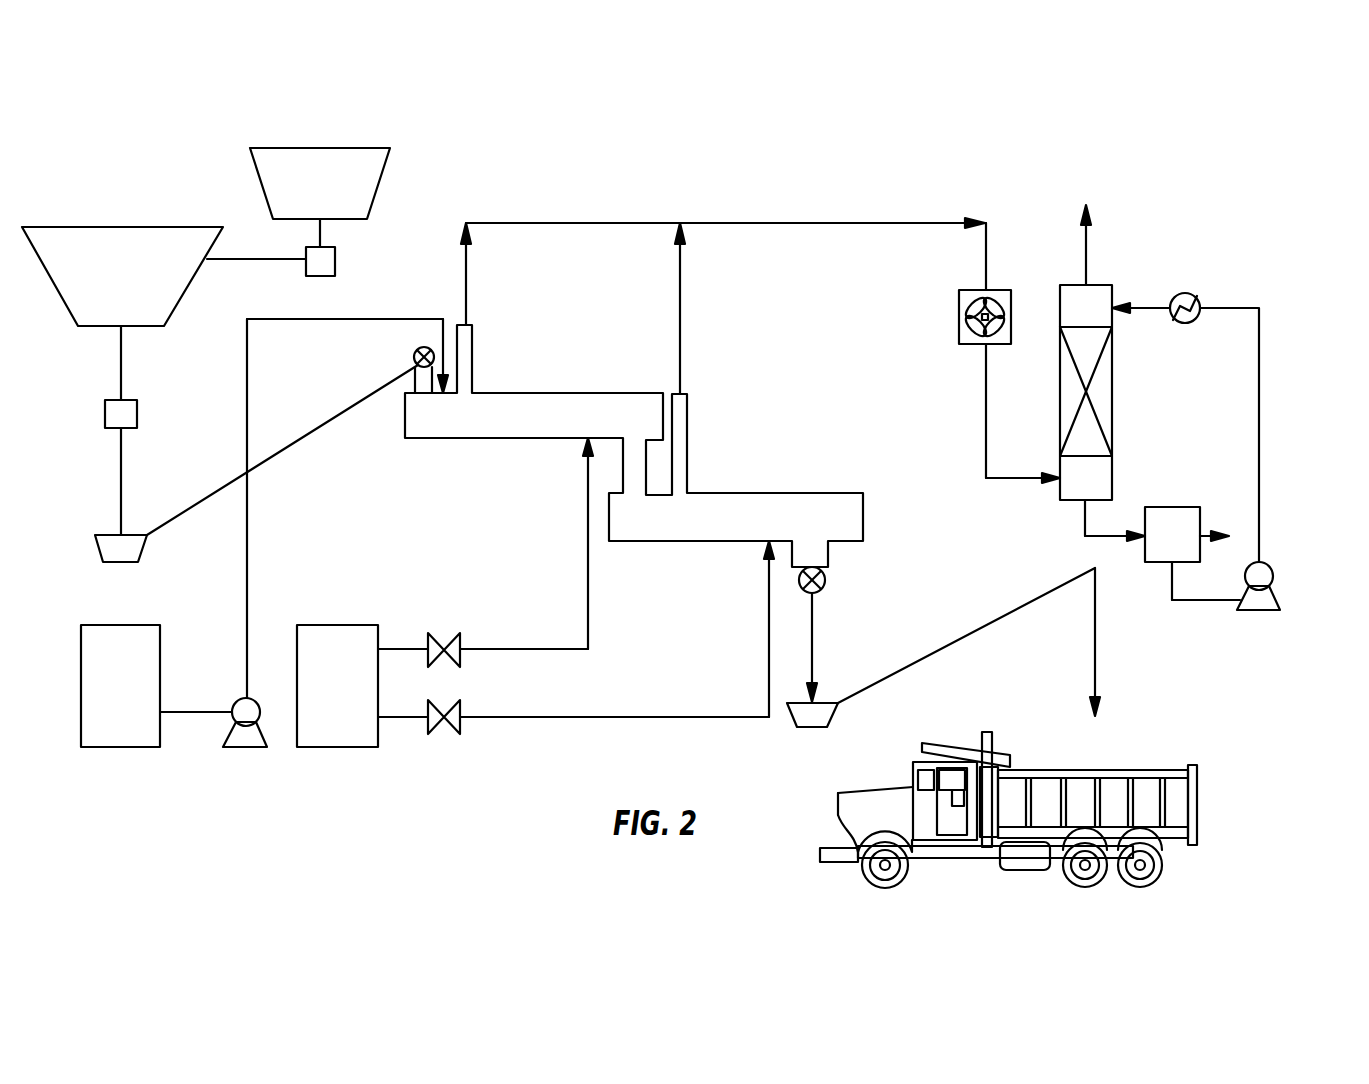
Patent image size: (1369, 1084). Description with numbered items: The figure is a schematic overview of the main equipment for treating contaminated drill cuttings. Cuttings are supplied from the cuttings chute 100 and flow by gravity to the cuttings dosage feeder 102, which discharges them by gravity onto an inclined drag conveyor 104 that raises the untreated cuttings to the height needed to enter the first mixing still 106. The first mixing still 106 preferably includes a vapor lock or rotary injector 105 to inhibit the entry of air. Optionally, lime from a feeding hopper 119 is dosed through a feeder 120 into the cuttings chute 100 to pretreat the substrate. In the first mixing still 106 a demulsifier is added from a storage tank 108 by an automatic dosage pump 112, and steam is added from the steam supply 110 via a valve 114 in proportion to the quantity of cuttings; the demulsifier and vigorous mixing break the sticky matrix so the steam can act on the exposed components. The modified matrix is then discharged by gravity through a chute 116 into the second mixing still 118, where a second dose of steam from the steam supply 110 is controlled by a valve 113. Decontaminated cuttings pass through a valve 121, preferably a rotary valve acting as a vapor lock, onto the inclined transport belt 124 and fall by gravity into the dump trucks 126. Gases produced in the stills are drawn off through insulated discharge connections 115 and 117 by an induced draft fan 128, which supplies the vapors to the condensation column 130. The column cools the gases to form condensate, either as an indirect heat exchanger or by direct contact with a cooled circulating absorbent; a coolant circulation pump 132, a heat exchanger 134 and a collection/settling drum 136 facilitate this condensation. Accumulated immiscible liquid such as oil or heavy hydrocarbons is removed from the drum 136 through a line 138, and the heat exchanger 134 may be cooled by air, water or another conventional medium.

The cuttings chute 100 is at (143, 295).
The cuttings dosage feeder 102 is at (111, 428).
The inclined drag conveyor 104 is at (344, 411).
The vapor lock or rotary injector 105 is at (414, 352).
The first mixing still 106 is at (423, 440).
The storage tank 108 is at (140, 703).
The steam supply 110 is at (360, 703).
The automatic dosage pump 112 is at (240, 749).
The valve 113 is at (462, 705).
The valve 114 is at (462, 637).
The discharge connection 115 is at (473, 350).
The chute 116 is at (660, 466).
The discharge connection 117 is at (698, 413).
The second mixing still 118 is at (747, 532).
The feeding hopper 119 is at (389, 148).
The feeder 120 is at (335, 265).
The valve 121 is at (826, 585).
The inclined transport belt 124 is at (930, 656).
The dump trucks 126 is at (1198, 790).
The induced draft fan 128 is at (968, 345).
The condensation column 130 is at (1065, 502).
The coolant circulation pump 132 is at (1274, 572).
The heat exchanger 134 is at (1186, 291).
The collection/settling drum 136 is at (1190, 506).
The line 138 is at (1218, 525).